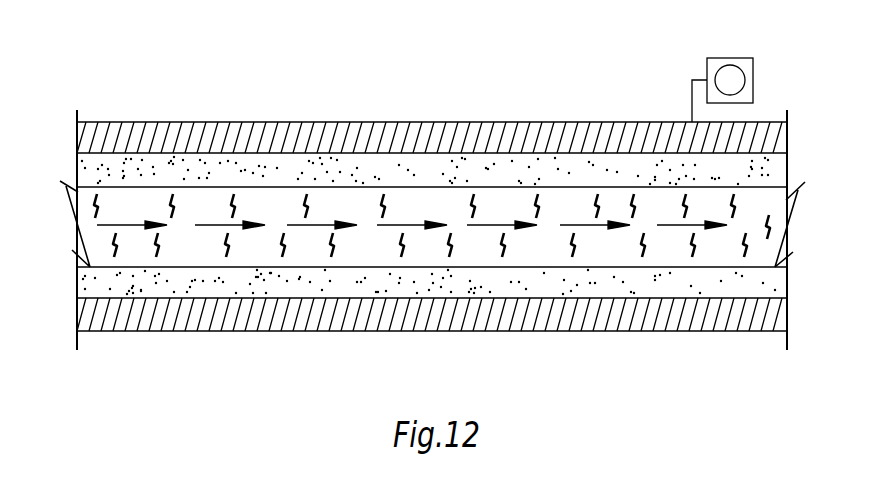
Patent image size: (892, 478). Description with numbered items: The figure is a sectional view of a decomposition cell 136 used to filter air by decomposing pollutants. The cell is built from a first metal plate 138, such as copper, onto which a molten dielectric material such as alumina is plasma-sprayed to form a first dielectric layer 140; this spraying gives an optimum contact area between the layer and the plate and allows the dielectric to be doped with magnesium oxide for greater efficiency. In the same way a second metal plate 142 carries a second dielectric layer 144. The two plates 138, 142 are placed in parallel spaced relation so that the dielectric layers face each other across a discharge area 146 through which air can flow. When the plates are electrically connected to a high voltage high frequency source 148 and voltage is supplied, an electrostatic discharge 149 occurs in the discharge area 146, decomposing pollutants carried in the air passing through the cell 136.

The decomposition cell 136 is at (242, 77).
The first metal plate 138 is at (165, 122).
The first dielectric layer 140 is at (287, 158).
The second metal plate 142 is at (423, 320).
The second dielectric layer 144 is at (302, 290).
The discharge area 146 is at (563, 207).
The high voltage high frequency source 148 is at (715, 58).
The electrostatic discharge 149 is at (577, 250).